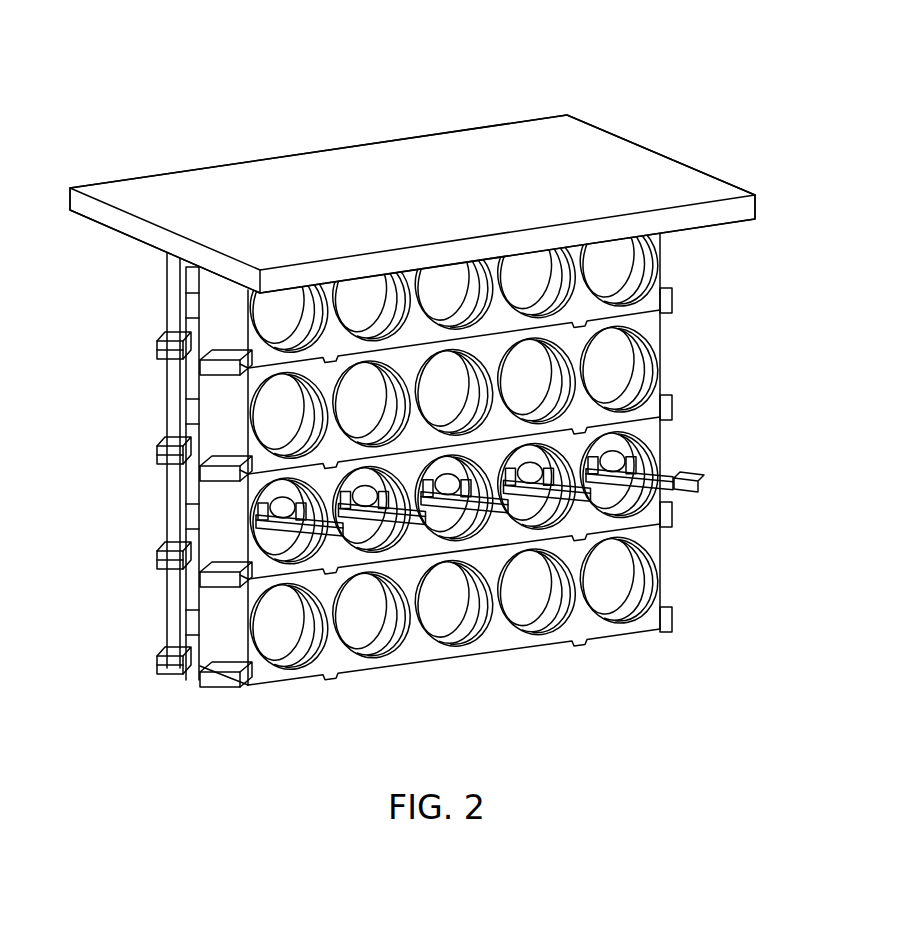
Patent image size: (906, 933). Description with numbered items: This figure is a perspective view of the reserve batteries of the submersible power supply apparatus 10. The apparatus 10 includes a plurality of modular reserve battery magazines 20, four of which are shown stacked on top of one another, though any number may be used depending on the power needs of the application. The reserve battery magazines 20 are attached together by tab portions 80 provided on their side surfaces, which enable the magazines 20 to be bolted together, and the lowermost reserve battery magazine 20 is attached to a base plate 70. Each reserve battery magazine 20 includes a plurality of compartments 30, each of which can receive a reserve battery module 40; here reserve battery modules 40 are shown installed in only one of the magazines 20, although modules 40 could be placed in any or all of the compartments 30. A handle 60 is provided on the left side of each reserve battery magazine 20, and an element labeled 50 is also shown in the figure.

The submersible power supply apparatus 10 is at (415, 361).
The reserve battery magazine 20 is at (672, 302).
The compartment 30 is at (612, 358).
The reserve battery module 40 is at (668, 451).
The gripper end cap 50 is at (702, 484).
The handle 60 is at (187, 298).
The base plate 70 is at (620, 163).
The tab portion 80 is at (157, 350).